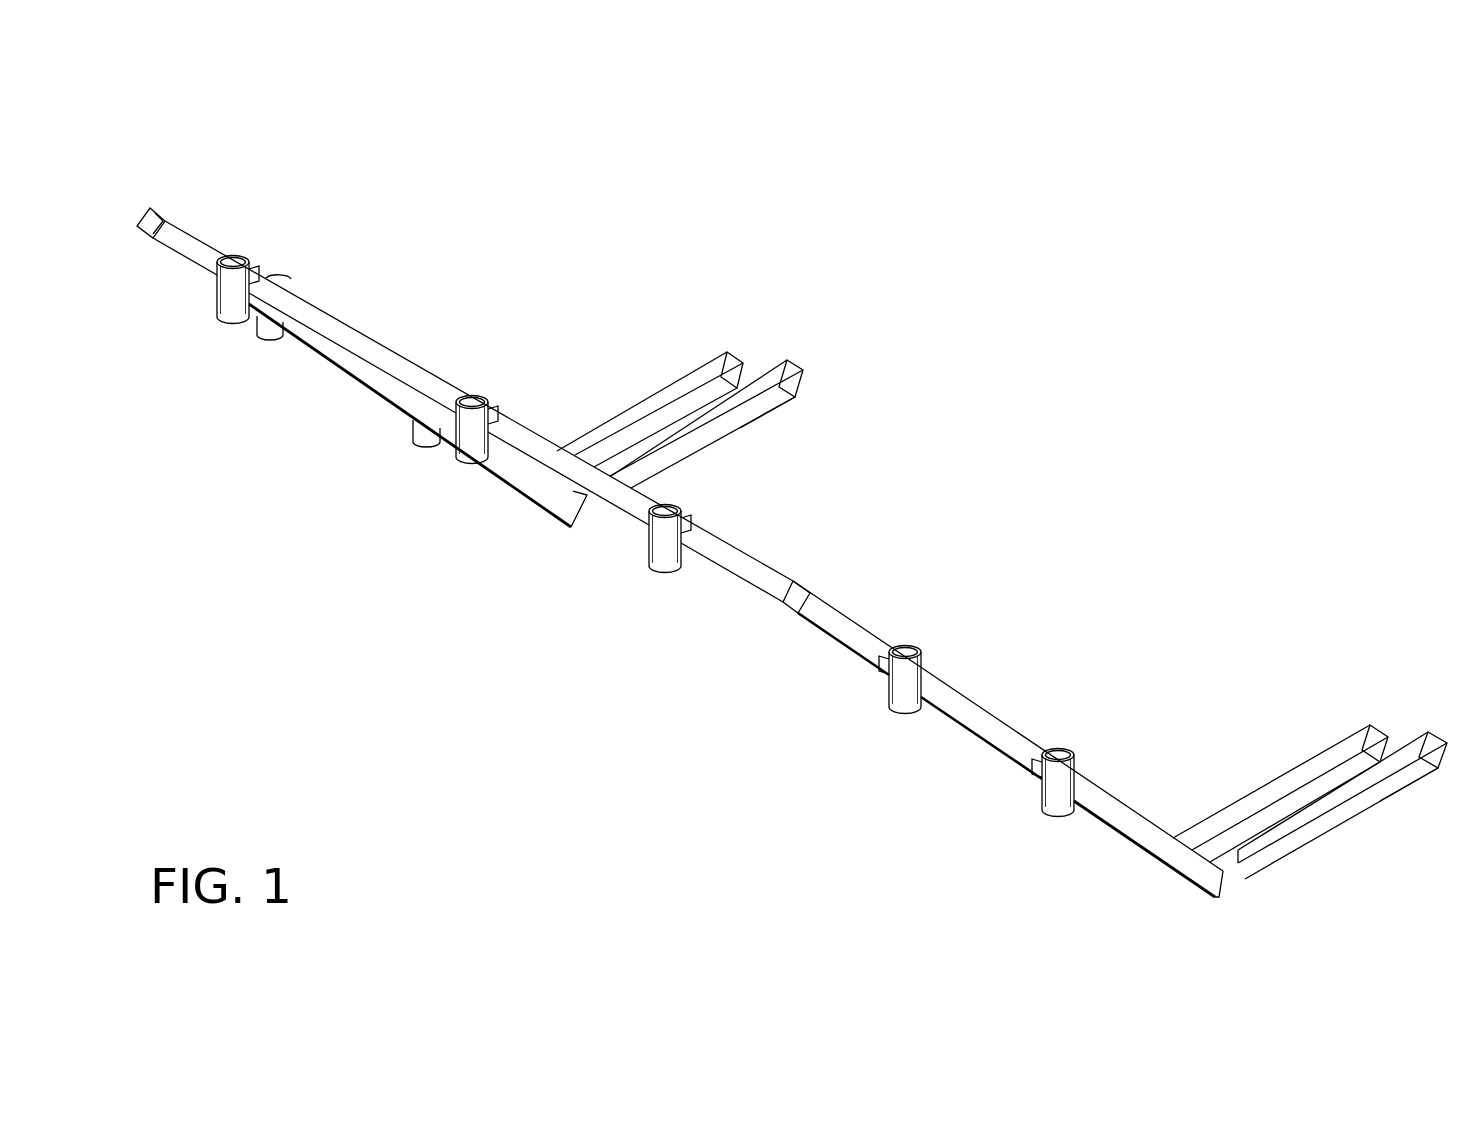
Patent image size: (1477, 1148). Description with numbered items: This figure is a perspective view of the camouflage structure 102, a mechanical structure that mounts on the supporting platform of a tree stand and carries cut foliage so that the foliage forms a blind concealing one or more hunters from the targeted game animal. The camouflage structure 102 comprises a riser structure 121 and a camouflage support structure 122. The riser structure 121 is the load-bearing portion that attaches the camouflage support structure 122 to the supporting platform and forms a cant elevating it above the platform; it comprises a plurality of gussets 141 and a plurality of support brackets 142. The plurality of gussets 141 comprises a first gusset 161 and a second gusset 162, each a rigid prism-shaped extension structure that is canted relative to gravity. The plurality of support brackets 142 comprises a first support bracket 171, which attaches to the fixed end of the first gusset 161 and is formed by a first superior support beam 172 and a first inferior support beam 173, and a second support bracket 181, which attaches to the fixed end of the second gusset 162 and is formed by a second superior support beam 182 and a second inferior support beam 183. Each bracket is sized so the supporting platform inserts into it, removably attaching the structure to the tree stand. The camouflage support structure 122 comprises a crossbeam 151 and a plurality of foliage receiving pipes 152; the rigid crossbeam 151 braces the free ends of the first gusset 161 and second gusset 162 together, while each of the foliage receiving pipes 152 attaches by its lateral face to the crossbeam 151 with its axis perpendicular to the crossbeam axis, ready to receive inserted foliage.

The camouflage structure 102 is at (190, 170).
The riser structure 121 is at (1240, 740).
The camouflage support structure 122 is at (195, 353).
The plurality of gussets 141 is at (1000, 921).
The plurality of support brackets 142 is at (960, 284).
The crossbeam 151 is at (418, 375).
The plurality of foliage receiving pipes 152 is at (233, 292).
The first gusset 161 is at (540, 490).
The second gusset 162 is at (1115, 818).
The first support bracket 171 is at (803, 367).
The first superior support beam 172 is at (710, 370).
The first inferior support beam 173 is at (735, 427).
The second support bracket 181 is at (1378, 723).
The second superior support beam 182 is at (1330, 733).
The second inferior support beam 183 is at (1375, 807).